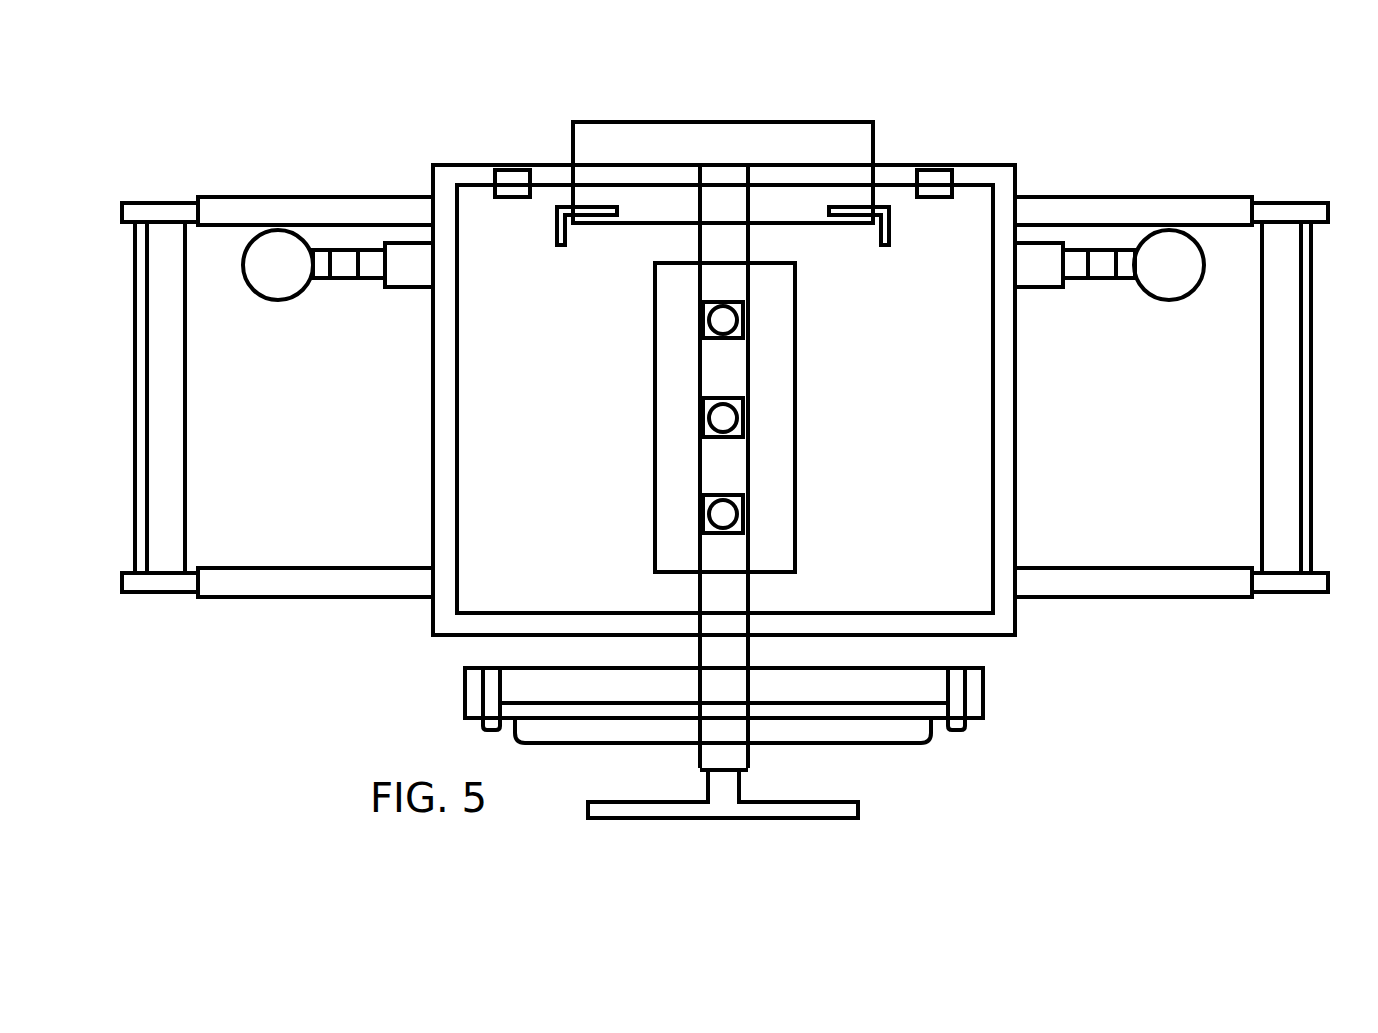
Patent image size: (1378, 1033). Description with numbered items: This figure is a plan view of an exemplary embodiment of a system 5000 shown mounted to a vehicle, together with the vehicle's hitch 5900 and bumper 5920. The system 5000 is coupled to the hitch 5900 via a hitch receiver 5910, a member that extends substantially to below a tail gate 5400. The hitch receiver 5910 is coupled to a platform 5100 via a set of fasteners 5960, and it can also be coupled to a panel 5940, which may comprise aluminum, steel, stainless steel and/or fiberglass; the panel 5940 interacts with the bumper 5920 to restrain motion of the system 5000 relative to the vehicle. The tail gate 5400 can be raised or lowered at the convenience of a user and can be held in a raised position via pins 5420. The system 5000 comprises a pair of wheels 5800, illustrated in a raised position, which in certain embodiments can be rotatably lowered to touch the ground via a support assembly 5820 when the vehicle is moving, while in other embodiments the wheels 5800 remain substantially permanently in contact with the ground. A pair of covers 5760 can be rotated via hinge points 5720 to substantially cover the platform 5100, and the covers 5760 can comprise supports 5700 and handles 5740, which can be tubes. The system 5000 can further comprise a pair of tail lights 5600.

The system 5000 is at (517, 52).
The platform 5100 is at (671, 417).
The tail gate 5400 is at (755, 145).
The pins 5420 is at (888, 245).
The tail lights 5600 is at (937, 197).
The supports 5700 is at (1135, 600).
The hinge points 5720 is at (997, 597).
The handles 5740 is at (1312, 420).
The covers 5760 is at (1221, 520).
The wheels 5800 is at (280, 262).
The support assembly 5820 is at (1077, 280).
The hitch 5900 is at (750, 790).
The hitch receiver 5910 is at (700, 762).
The bumper 5920 is at (933, 736).
The panel 5940 is at (985, 690).
The fasteners 5960 is at (725, 520).